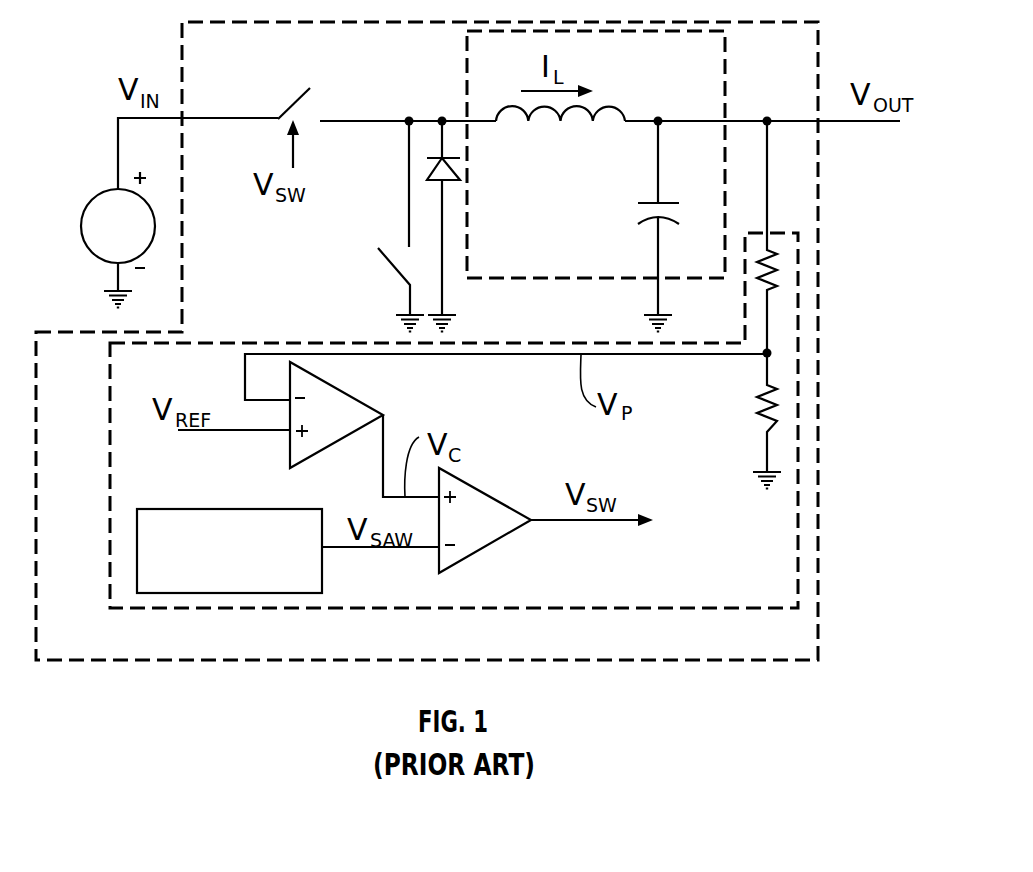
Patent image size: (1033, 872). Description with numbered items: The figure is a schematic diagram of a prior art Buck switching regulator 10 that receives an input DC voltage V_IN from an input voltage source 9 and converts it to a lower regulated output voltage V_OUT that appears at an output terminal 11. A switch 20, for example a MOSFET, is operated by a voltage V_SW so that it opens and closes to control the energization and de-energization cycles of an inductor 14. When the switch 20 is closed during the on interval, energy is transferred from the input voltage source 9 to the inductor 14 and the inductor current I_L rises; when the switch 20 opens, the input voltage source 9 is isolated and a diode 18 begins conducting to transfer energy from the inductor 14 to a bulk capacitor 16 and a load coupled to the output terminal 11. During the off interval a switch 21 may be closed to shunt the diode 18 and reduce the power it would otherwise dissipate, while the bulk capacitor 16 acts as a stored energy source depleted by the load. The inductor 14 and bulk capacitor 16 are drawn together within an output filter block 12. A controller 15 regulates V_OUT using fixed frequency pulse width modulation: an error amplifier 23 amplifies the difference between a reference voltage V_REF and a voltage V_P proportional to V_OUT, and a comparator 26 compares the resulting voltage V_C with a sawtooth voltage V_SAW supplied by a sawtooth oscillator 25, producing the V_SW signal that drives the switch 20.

The input voltage source 9 is at (103, 190).
The Buck switching regulator 10 is at (827, 253).
The output terminal 11 is at (858, 122).
The output filter 12 is at (725, 63).
The inductor 14 is at (522, 122).
The controller 15 is at (555, 342).
The bulk capacitor 16 is at (668, 200).
The diode 18 is at (428, 160).
The switch 20 is at (300, 85).
The switch 21 is at (385, 270).
The error amplifier 23 is at (318, 453).
The sawtooth oscillator 25 is at (150, 508).
The comparator 26 is at (480, 487).